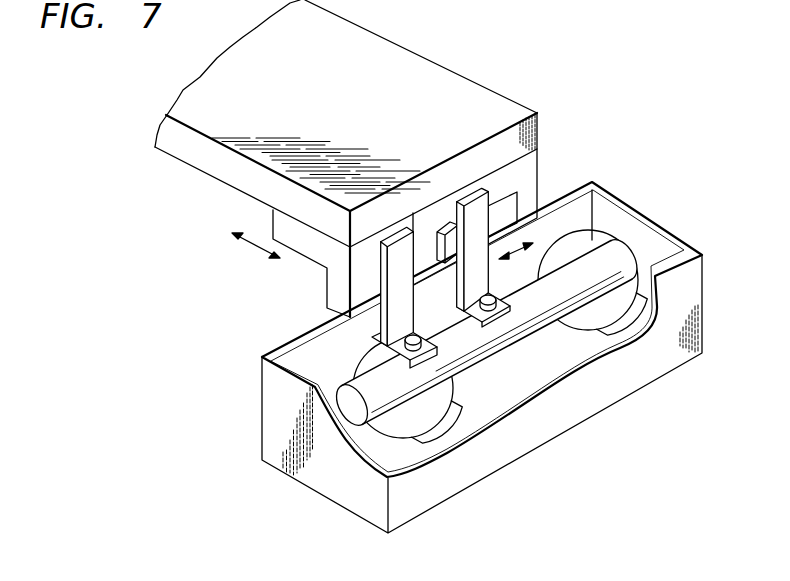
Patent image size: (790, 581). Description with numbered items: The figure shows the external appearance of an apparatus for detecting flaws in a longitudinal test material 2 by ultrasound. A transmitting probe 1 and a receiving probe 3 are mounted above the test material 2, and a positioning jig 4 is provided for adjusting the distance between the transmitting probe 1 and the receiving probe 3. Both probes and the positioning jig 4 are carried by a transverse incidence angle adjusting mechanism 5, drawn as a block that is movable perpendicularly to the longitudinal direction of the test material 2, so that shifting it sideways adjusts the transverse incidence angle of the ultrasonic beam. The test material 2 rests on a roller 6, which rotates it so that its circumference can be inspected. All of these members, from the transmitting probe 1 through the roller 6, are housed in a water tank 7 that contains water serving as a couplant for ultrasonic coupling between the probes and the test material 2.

The transmitting probe 1 is at (432, 345).
The test material 2 is at (628, 258).
The receiving probe 3 is at (507, 313).
The positioning jig 4 is at (517, 202).
The transverse incidence angle adjusting mechanism 5 is at (240, 188).
The roller 6 is at (452, 412).
The water tank 7 is at (666, 223).